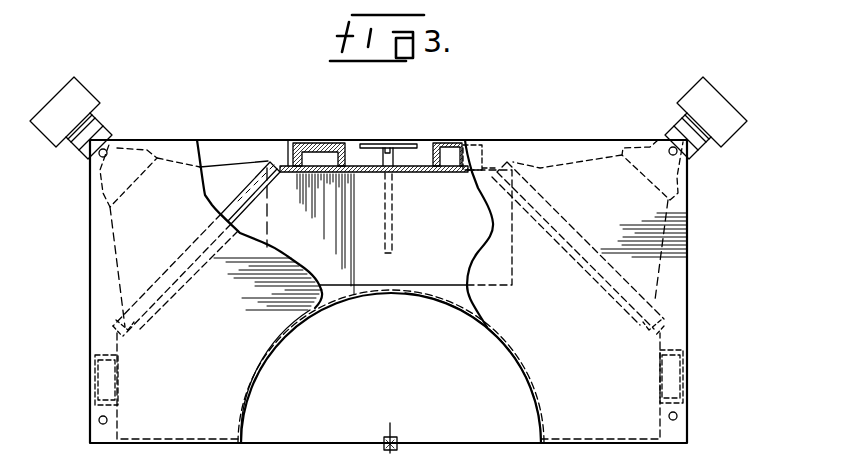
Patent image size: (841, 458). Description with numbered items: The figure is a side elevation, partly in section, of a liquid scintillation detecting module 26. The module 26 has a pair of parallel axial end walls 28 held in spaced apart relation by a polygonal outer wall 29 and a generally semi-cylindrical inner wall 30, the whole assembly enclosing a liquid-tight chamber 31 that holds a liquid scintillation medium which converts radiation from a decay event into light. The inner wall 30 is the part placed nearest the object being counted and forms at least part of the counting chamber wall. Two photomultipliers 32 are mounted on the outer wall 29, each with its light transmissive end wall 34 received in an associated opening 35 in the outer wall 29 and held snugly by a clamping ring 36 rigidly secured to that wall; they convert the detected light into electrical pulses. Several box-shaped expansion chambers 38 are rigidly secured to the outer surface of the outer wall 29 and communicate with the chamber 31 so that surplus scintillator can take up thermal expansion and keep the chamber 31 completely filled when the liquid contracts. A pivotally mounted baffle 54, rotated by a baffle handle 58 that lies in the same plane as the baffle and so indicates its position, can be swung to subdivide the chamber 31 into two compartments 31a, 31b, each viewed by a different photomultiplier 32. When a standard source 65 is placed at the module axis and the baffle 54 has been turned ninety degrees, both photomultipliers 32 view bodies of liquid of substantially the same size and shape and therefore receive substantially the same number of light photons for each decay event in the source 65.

The liquid scintillation detecting module 26 is at (80, 283).
The axial end walls 28 is at (218, 112).
The polygonal outer wall 29 is at (288, 140).
The semi-cylindrical inner wall 30 is at (278, 345).
The liquid-tight chamber 31 is at (457, 300).
The compartment 31a is at (540, 358).
The compartment 31b is at (217, 410).
The photomultiplier 32 is at (133, 230).
The light transmissive end wall 34 is at (200, 267).
The opening 35 is at (135, 330).
The clamping ring 36 is at (259, 170).
The expansion chamber 38 is at (320, 152).
The baffle 54 is at (413, 273).
The baffle handle 58 is at (424, 113).
The standard source 65 is at (388, 437).